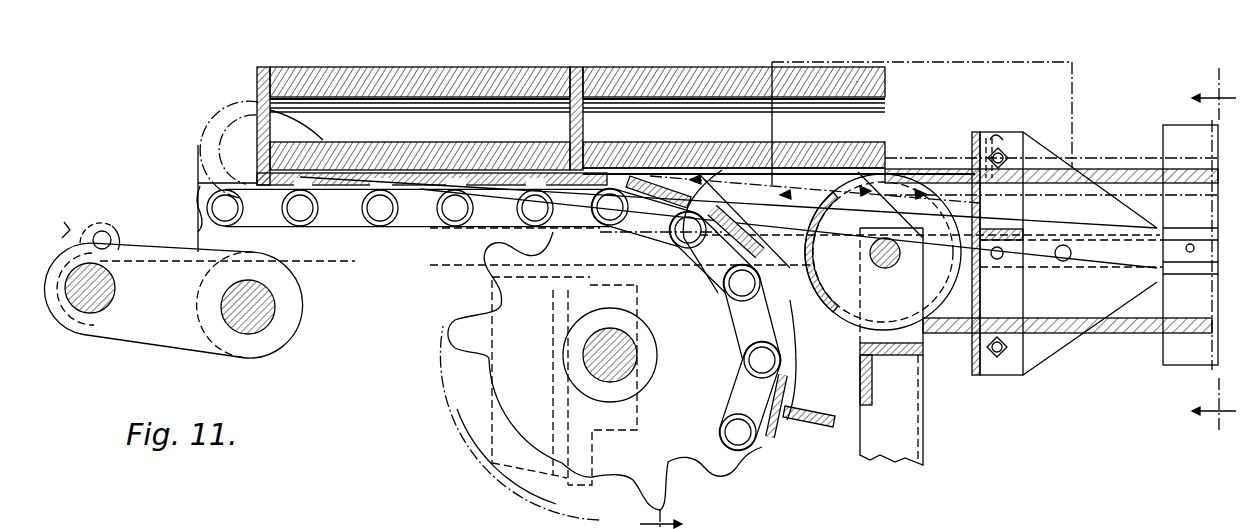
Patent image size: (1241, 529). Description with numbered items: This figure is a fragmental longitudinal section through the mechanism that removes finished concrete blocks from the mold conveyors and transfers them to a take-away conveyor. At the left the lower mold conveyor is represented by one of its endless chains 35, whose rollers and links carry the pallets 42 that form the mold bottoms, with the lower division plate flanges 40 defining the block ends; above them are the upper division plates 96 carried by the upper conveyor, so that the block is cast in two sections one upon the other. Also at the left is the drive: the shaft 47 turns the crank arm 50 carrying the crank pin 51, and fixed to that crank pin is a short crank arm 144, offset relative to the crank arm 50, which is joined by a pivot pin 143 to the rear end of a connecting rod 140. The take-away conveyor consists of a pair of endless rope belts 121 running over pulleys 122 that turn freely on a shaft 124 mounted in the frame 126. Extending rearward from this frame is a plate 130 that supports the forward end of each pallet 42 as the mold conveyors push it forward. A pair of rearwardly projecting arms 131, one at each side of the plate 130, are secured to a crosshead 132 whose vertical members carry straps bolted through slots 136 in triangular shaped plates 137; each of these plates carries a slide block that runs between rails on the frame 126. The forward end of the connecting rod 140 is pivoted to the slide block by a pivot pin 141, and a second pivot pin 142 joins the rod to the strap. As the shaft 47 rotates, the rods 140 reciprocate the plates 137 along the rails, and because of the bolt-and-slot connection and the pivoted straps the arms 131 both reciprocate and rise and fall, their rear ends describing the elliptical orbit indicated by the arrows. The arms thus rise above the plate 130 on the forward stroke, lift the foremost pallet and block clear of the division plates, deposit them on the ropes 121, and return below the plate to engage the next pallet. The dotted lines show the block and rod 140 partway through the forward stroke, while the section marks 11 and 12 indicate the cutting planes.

The upper division plate 96 is at (256, 73).
The lower division plate flange 40 is at (246, 152).
The pallet 42 is at (800, 185).
The endless chain 35 is at (385, 232).
The connecting rod 140 is at (420, 262).
The short crank arm 144 is at (72, 240).
The pivot pin 143 is at (108, 236).
The crank arm 50 is at (175, 332).
The crank pin 51 is at (92, 303).
The shaft 47 is at (270, 312).
The rearwardly projecting arm 131 is at (692, 258).
The plate 130 is at (796, 272).
The shaft 124 is at (886, 268).
The pulley 122 is at (925, 338).
The frame 126 is at (910, 428).
The crosshead 132 is at (1051, 253).
The slot 136 is at (998, 142).
The triangular shaped plate 137 is at (1038, 362).
The endless rope belt 121 is at (1100, 335).
The second pivot pin 142 is at (998, 260).
The pivot pin 141 is at (1063, 262).
The section line 12- 12 is at (1214, 250).
The section line 11- 11 is at (650, 519).